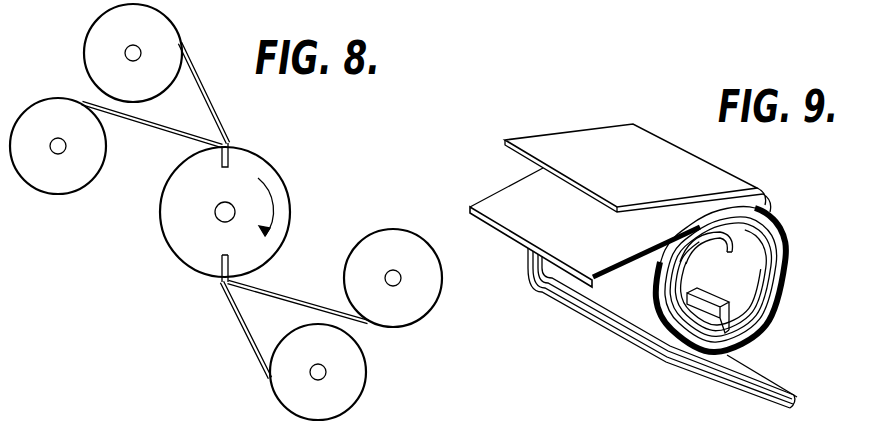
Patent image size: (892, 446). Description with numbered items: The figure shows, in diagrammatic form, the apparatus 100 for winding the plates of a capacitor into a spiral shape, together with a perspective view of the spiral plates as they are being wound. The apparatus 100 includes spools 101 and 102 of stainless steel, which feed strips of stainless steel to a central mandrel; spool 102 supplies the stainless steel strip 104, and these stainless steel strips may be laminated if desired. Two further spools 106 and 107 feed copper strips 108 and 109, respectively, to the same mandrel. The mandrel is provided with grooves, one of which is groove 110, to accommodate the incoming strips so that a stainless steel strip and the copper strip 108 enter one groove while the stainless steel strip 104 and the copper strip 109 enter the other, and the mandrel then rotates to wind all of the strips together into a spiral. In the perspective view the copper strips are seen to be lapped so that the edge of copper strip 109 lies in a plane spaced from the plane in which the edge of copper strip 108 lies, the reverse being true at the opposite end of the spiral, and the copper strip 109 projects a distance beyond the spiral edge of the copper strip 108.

In FIG. 8, the apparatus 100 is at (284, 155).
In FIG. 8, the spool 101 is at (96, 29).
In FIG. 8, the spool 102 is at (366, 378).
In FIG. 8, the strip 104 is at (233, 310).
In FIG. 8, the spool 106 is at (65, 193).
In FIG. 8, the spool 107 is at (377, 230).
In FIG. 8, the strip 108 is at (143, 125).
In FIG. 9, the strip 108 is at (505, 195).
In FIG. 8, the strip 109 is at (287, 296).
In FIG. 9, the strip 109 is at (531, 262).
In FIG. 8, the groove 110 is at (214, 157).